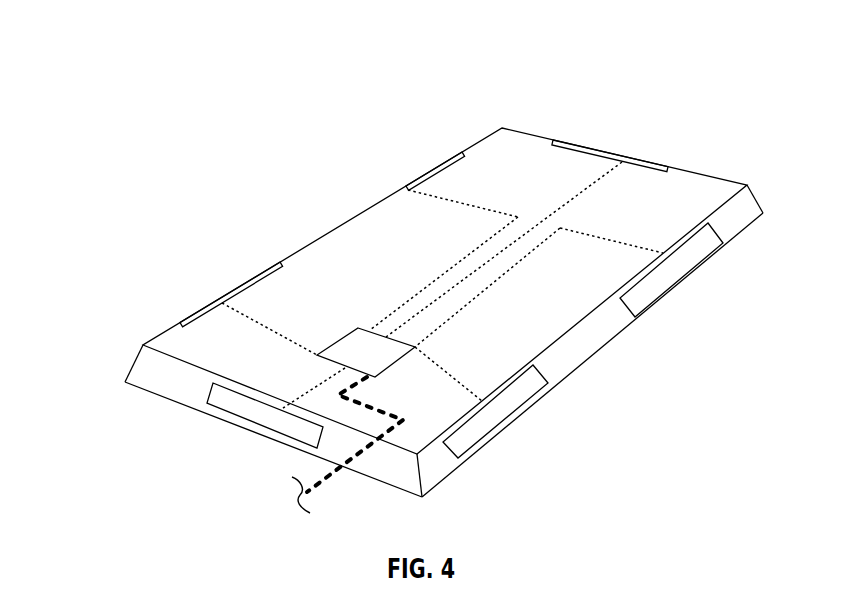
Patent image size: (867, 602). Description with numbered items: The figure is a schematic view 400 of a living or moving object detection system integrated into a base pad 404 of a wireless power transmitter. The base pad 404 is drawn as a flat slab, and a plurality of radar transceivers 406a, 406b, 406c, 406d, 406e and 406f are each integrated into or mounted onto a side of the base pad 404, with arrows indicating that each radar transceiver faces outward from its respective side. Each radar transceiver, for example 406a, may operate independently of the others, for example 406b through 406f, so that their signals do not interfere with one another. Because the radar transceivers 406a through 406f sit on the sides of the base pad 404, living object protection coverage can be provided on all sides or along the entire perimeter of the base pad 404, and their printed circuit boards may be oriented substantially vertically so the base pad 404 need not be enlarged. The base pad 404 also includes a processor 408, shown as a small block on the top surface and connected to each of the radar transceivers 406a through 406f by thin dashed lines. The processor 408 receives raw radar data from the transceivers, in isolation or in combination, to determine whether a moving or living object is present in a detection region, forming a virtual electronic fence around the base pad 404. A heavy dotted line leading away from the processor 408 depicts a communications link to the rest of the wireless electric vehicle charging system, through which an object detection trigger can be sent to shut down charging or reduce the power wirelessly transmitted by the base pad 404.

The schematic view 400 is at (172, 53).
The base pad 404 is at (400, 279).
The processor 408 is at (358, 328).
The radar transceiver 406a is at (303, 432).
The radar transceiver 406b is at (619, 432).
The radar transceiver 406c is at (788, 266).
The radar transceiver 406d is at (586, 145).
The radar transceiver 406e is at (455, 156).
The radar transceiver 406f is at (257, 272).